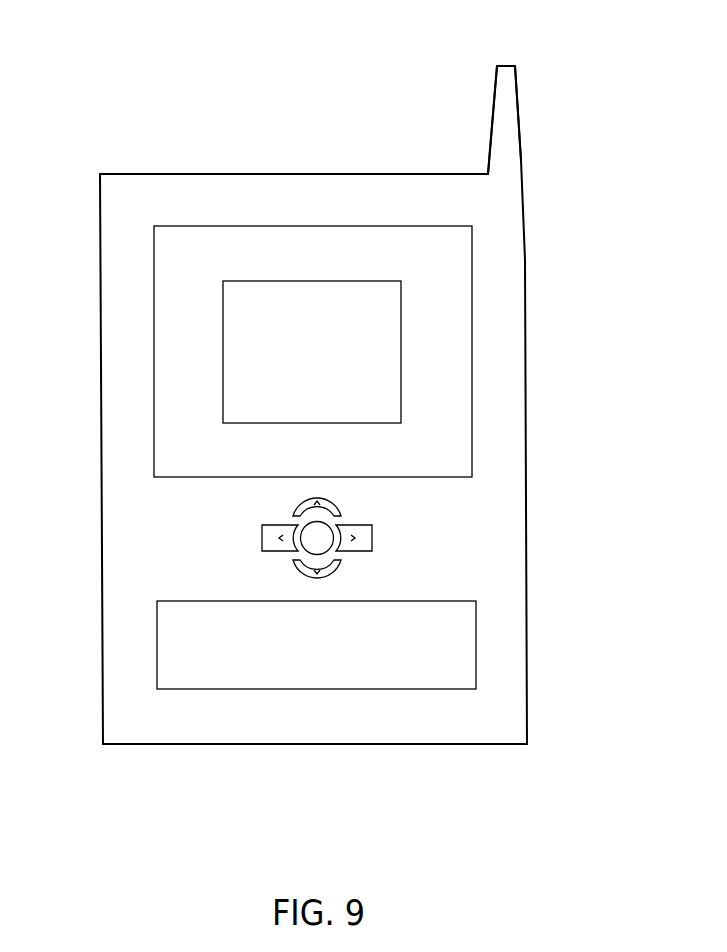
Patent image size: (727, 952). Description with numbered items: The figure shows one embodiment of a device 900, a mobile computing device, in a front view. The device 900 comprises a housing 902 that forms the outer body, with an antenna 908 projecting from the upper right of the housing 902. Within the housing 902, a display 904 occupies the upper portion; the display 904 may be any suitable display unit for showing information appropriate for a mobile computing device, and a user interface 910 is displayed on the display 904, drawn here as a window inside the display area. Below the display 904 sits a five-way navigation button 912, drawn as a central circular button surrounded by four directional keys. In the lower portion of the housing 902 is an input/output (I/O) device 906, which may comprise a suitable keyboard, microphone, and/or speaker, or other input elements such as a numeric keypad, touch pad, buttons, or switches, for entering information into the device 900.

The device 900 is at (115, 87).
The housing 902 is at (527, 460).
The display 904 is at (472, 243).
The input/output (I/O) device 906 is at (476, 637).
The antenna 908 is at (490, 112).
The user interface 910 is at (401, 371).
The five-way navigation button 912 is at (384, 531).